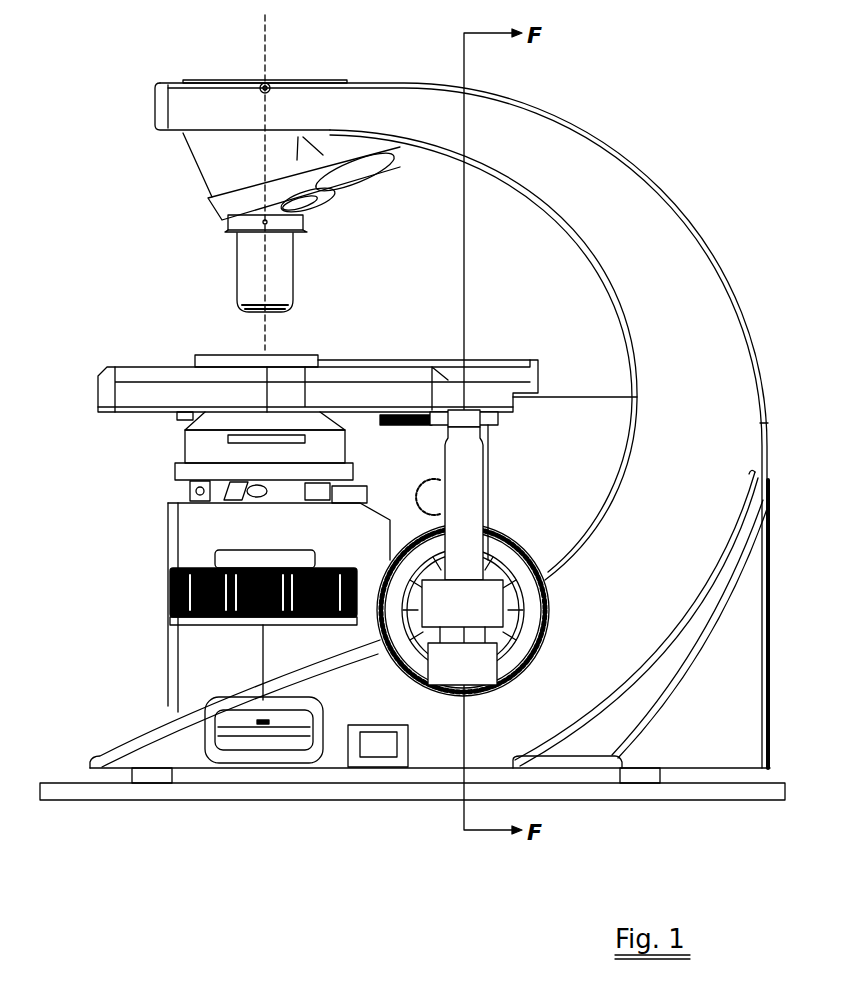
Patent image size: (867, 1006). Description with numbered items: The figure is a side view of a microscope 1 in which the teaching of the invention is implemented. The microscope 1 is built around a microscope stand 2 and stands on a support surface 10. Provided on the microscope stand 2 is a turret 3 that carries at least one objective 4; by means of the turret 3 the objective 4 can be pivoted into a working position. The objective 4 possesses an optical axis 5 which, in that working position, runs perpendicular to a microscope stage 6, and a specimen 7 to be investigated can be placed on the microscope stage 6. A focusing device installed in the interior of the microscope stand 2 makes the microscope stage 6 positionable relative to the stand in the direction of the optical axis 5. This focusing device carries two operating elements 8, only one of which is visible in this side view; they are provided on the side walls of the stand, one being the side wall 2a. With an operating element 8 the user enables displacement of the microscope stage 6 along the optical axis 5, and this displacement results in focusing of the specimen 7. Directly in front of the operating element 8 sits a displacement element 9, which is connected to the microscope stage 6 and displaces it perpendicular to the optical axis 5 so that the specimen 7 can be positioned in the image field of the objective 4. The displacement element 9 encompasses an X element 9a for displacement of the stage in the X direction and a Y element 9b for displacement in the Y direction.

The microscope 1 is at (792, 273).
The microscope stand 2 is at (620, 163).
The side wall 2a is at (682, 343).
The turret 3 is at (215, 207).
The objective 4 is at (282, 251).
The optical axis 5 is at (268, 58).
The microscope stage 6 is at (127, 400).
The specimen 7 is at (228, 358).
The operating element 8 is at (547, 613).
The displacement element 9 is at (473, 478).
The X element 9a is at (487, 590).
The Y element 9b is at (452, 673).
The support surface 10 is at (287, 793).